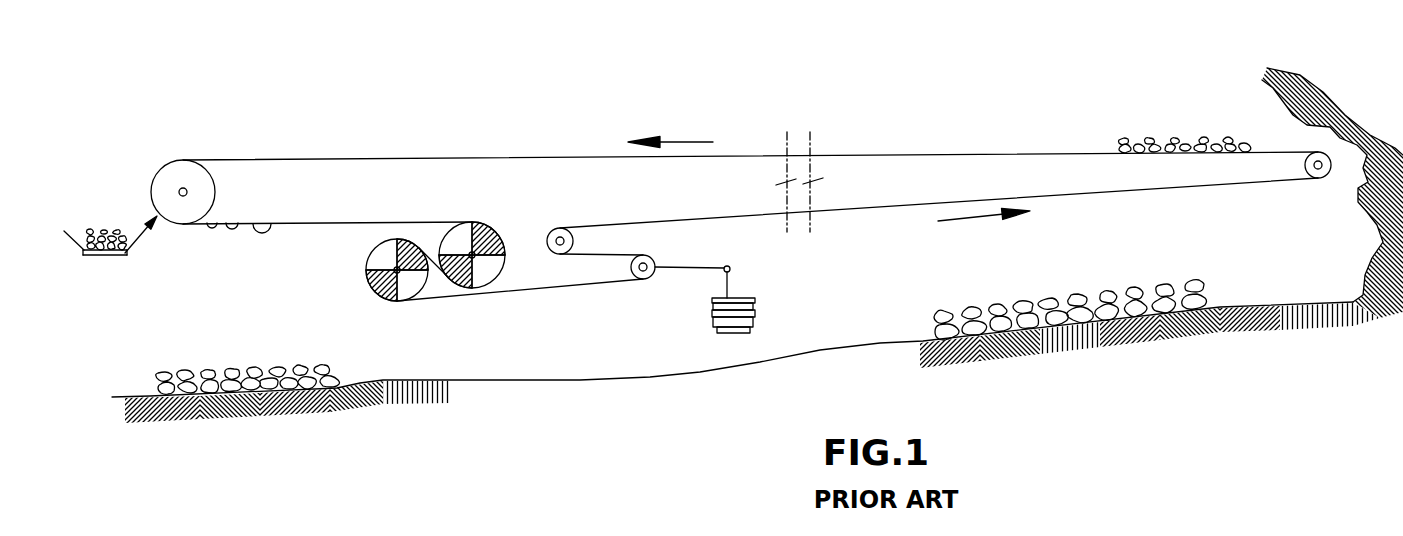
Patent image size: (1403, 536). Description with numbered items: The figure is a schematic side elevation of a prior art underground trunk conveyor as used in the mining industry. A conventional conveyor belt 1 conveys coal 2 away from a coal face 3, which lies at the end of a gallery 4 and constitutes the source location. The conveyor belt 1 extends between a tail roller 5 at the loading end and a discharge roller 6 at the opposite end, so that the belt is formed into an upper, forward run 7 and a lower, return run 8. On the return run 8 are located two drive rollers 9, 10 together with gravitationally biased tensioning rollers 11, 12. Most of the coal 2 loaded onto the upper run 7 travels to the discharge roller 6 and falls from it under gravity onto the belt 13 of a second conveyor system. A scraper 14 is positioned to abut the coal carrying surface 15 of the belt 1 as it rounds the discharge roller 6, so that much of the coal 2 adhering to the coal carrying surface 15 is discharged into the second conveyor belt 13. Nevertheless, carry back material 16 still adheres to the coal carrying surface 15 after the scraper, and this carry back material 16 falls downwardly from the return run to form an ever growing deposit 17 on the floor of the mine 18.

The conveyor belt 1 is at (412, 154).
The coal 2 is at (1158, 138).
The coal face 3 is at (1350, 217).
The gallery 4 is at (1199, 243).
The tail roller 5 is at (1307, 166).
The discharge roller 6 is at (198, 182).
The upper forward run 7 is at (880, 153).
The lower return run 8 is at (910, 210).
The drive roller 9 is at (487, 272).
The drive roller 10 is at (390, 298).
The tensioning roller 11 is at (572, 243).
The tensioning roller 12 is at (655, 279).
The belt of second conveyor system 13 is at (107, 257).
The scraper 14 is at (157, 232).
The coal carrying surface 15 is at (337, 228).
The carry back material 16 is at (237, 228).
The deposit 17 is at (283, 377).
The floor of the mine 18 is at (273, 443).